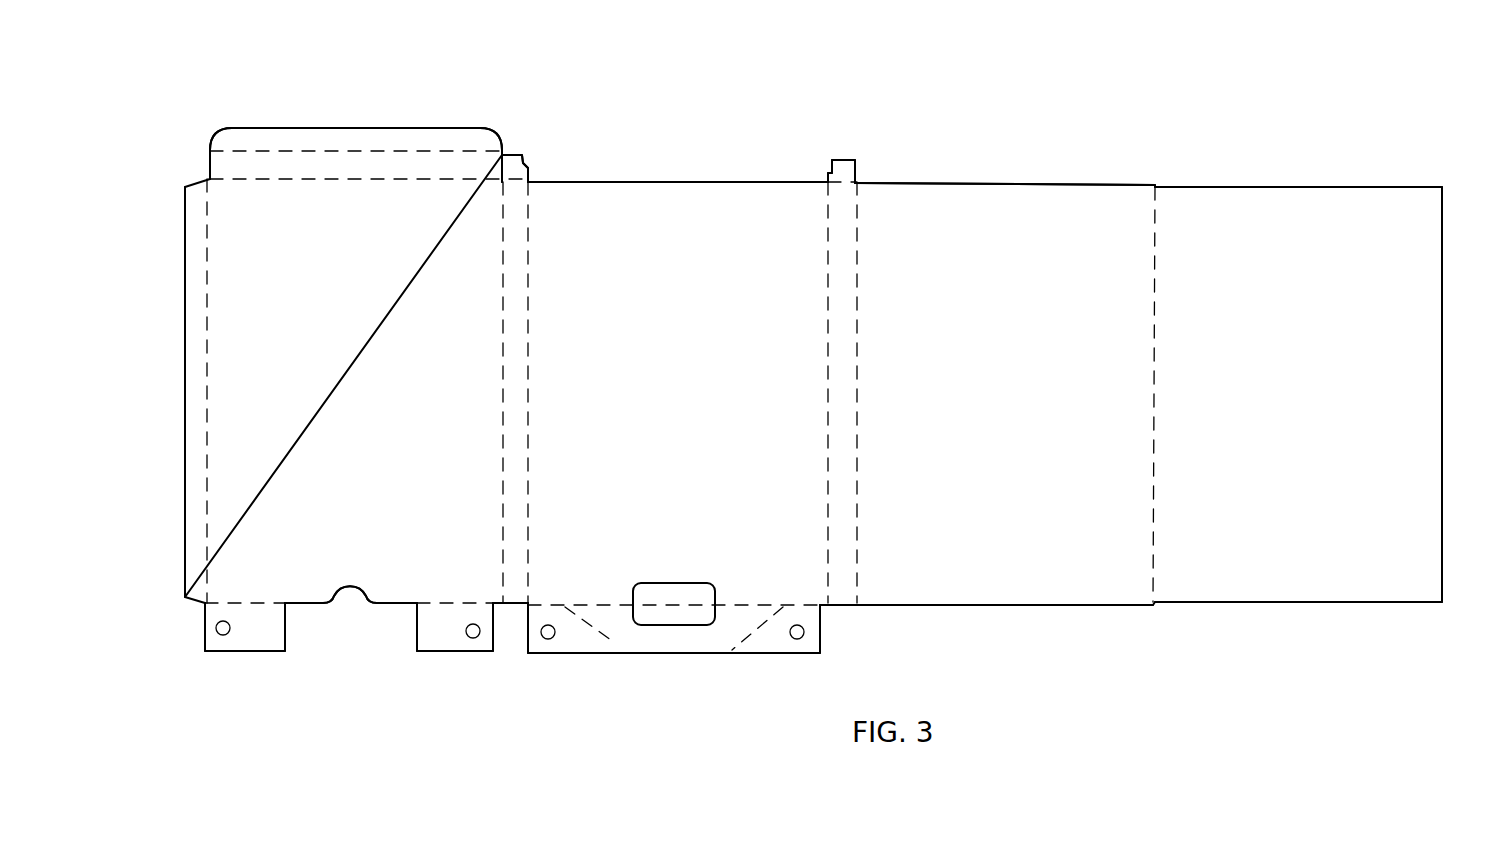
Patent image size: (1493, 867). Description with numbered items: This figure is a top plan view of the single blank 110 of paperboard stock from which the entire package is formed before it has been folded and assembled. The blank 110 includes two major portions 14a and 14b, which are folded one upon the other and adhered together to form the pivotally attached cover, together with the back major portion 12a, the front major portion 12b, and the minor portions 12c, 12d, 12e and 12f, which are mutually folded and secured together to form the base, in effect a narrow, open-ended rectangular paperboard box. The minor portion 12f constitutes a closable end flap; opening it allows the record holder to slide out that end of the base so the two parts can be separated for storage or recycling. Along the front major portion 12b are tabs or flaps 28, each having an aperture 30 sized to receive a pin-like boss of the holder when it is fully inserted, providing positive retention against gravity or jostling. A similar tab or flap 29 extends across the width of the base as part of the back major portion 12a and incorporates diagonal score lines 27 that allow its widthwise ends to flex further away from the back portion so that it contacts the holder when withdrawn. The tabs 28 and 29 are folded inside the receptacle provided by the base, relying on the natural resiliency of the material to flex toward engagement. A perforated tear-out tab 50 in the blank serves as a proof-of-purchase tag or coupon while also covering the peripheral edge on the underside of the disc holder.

The blank 110 is at (1375, 160).
The back major portion 12a is at (665, 217).
The front major portion 12b is at (390, 583).
The minor portion 12c is at (842, 228).
The minor portion 12d is at (517, 218).
The minor portion 12e is at (193, 373).
The closable end flap 12f is at (462, 163).
The major portion 14a is at (1044, 588).
The major portion 14b is at (1275, 585).
The diagonal score lines 27 is at (752, 630).
The tabs or flaps 28 is at (263, 637).
The tab or flap 29 is at (770, 648).
The aperture 30 is at (218, 632).
The perforated tear-out tab 50 is at (672, 597).